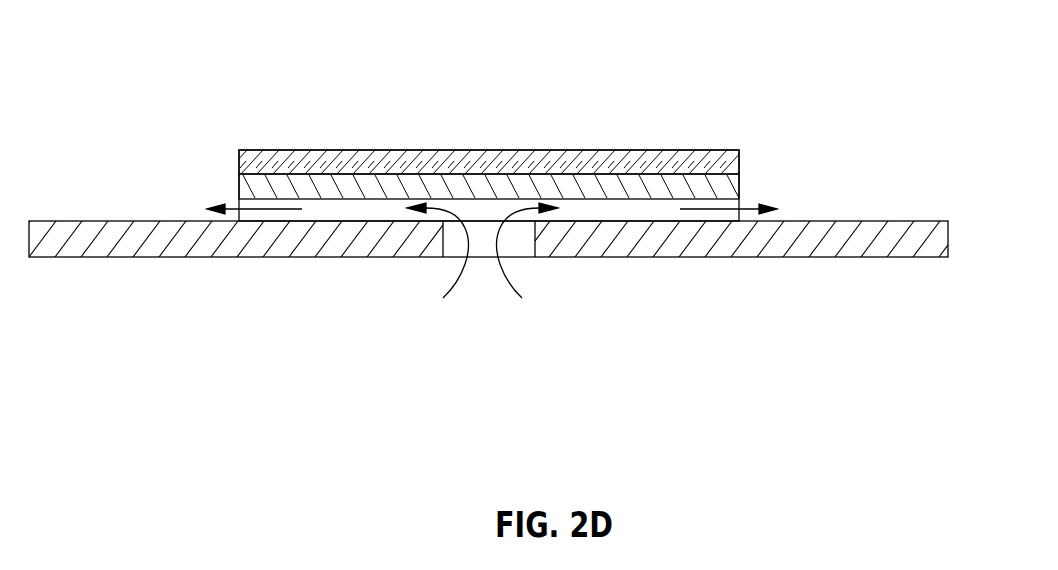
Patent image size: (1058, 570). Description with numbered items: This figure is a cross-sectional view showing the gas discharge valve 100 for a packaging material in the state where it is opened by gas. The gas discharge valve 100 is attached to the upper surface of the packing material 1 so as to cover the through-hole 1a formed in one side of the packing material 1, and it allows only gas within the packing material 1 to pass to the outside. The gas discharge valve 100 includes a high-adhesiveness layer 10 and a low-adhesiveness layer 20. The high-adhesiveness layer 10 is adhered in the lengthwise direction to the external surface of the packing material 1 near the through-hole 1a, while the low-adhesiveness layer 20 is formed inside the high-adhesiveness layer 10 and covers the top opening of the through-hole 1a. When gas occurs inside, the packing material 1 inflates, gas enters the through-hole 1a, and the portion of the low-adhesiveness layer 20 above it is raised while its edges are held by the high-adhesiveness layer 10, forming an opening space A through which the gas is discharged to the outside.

The packing material 1 is at (484, 314).
The through-hole 1a is at (483, 250).
The high-adhesiveness layer 10 is at (360, 158).
The low-adhesiveness layer 20 is at (476, 185).
The gas discharge valve 100 is at (505, 159).
The opening space A is at (578, 213).